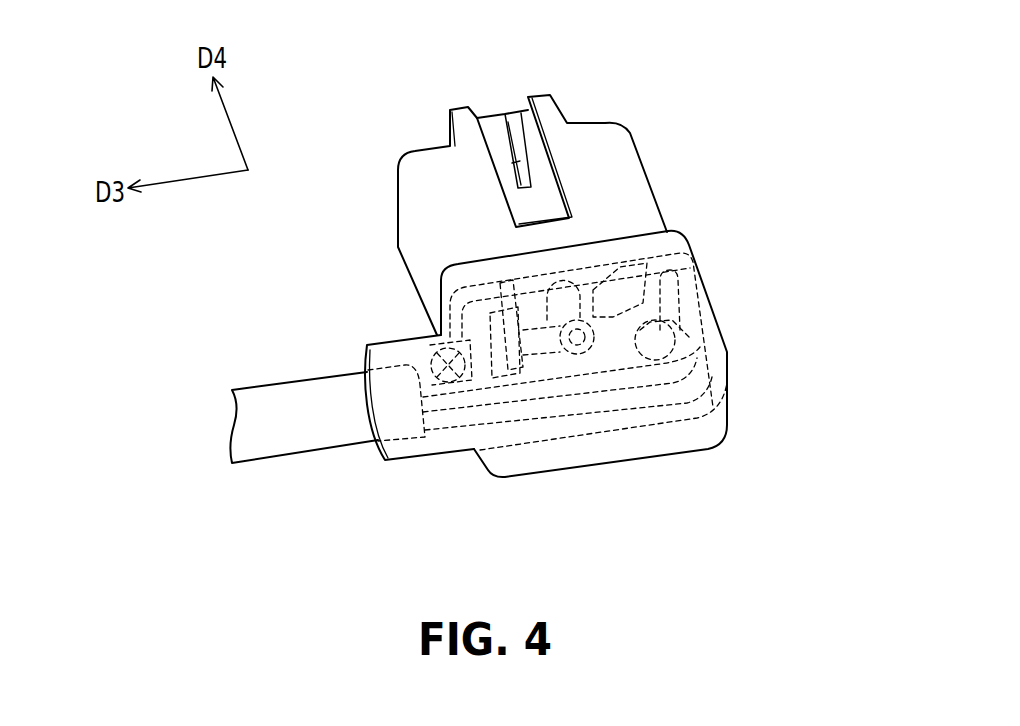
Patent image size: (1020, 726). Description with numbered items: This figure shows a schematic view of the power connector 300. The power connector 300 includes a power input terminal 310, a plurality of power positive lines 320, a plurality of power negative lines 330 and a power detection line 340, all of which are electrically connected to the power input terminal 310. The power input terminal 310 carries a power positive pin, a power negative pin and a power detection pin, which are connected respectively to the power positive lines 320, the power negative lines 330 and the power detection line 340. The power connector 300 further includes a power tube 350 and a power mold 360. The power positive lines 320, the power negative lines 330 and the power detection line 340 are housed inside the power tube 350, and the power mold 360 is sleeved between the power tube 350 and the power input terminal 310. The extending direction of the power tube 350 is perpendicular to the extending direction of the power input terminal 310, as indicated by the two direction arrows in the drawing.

The power input terminal 310 is at (625, 203).
The power positive lines 320 is at (672, 392).
The power negative lines 330 is at (430, 372).
The power detection line 340 is at (551, 368).
The power tube 350 is at (312, 433).
The power mold 360 is at (647, 438).
The power connector 300 is at (735, 515).